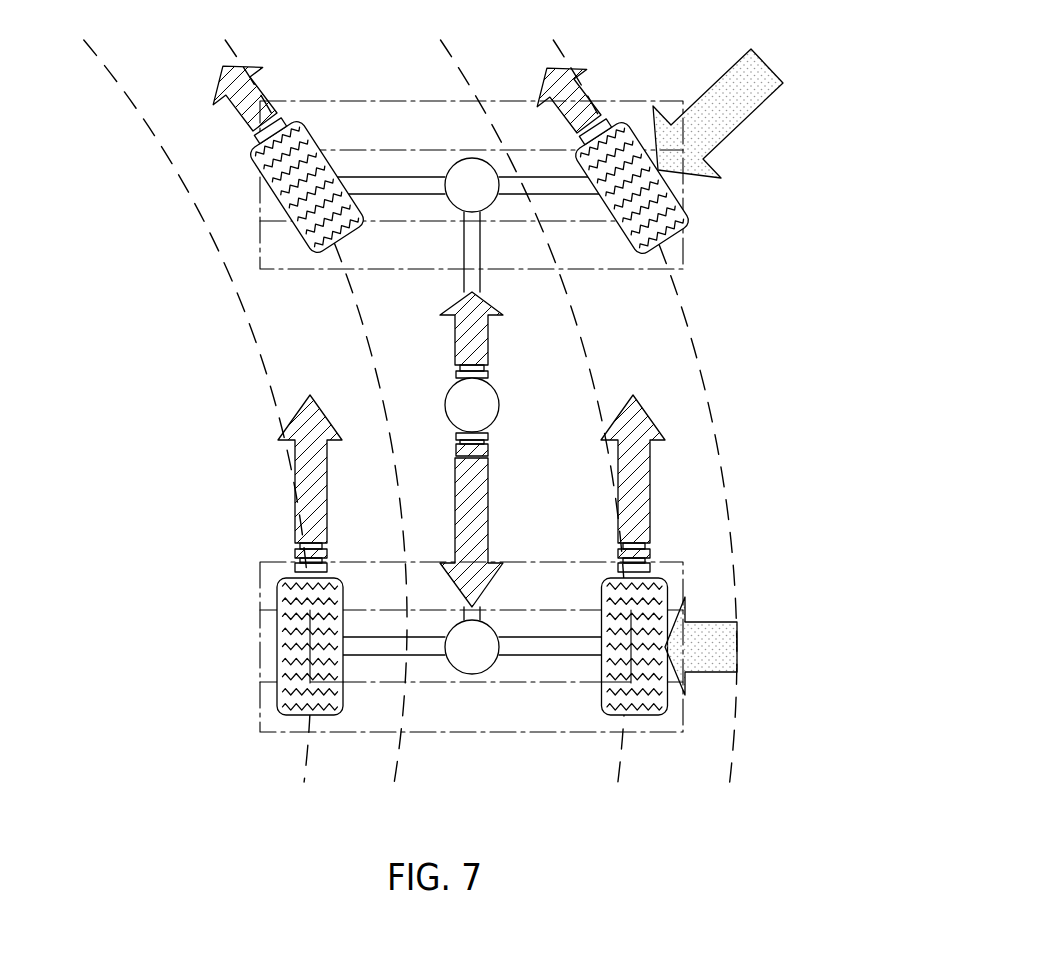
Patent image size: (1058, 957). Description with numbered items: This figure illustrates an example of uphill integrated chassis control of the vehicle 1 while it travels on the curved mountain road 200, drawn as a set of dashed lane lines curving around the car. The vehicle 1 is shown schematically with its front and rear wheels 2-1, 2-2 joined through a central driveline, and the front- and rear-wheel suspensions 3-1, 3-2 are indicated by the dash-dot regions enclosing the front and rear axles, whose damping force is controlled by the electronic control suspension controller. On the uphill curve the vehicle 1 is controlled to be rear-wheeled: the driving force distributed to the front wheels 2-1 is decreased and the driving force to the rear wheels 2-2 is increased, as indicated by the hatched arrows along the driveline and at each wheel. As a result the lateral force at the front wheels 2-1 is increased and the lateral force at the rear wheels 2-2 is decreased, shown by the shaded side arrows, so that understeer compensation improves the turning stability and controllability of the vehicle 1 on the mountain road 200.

The vehicle 1 is at (162, 500).
The front wheel 2-1 is at (258, 206).
The rear wheel 2-2 is at (463, 688).
The front-wheel suspension 3-1 is at (353, 150).
The rear-wheel suspension 3-2 is at (543, 732).
The mountain road 200 is at (732, 528).